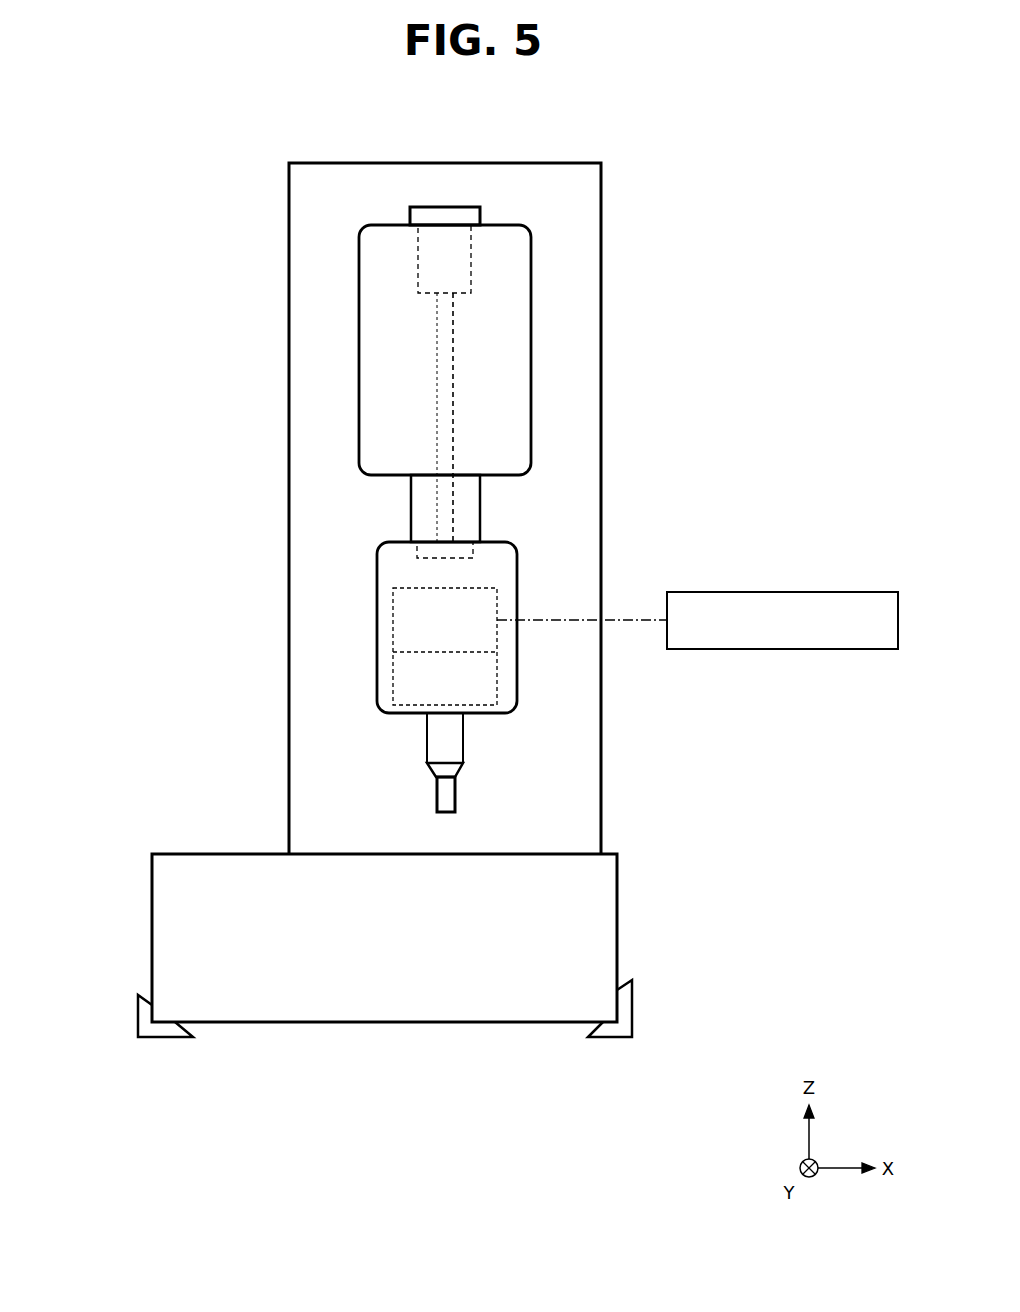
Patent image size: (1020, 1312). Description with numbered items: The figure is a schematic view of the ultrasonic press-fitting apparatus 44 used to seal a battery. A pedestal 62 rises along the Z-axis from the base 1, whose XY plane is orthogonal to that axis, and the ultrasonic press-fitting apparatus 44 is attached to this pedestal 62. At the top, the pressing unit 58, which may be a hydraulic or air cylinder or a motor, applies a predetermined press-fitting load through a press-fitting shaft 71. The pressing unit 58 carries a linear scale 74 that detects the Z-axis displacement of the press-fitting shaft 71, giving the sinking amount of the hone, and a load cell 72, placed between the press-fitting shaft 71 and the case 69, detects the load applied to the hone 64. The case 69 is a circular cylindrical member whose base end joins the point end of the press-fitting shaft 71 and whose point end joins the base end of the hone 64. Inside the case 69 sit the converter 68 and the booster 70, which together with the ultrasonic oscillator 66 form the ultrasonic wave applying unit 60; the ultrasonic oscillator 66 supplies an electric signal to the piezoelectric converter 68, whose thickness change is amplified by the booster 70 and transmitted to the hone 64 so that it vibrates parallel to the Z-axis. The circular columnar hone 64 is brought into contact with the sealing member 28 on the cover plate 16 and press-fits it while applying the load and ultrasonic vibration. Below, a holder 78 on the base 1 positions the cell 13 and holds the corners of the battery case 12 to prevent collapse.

The base 1 is at (439, 1114).
The battery case 12 is at (282, 1023).
The cell 13 is at (151, 932).
The cover plate 16 is at (190, 853).
The sealing member 28 is at (448, 853).
The ultrasonic press-fitting apparatus 44 is at (495, 200).
The pressing unit 58 is at (493, 280).
The ultrasonic wave applying unit 60 is at (687, 565).
The pedestal 62 is at (603, 203).
The hone 64 is at (462, 778).
The ultrasonic oscillator 66 is at (868, 590).
The converter 68 is at (477, 588).
The case 69 is at (377, 633).
The booster 70 is at (517, 680).
The press-fitting shaft 71 is at (411, 503).
The load cell 72 is at (417, 552).
The linear scale 74 is at (437, 342).
The holder 78 is at (172, 1040).